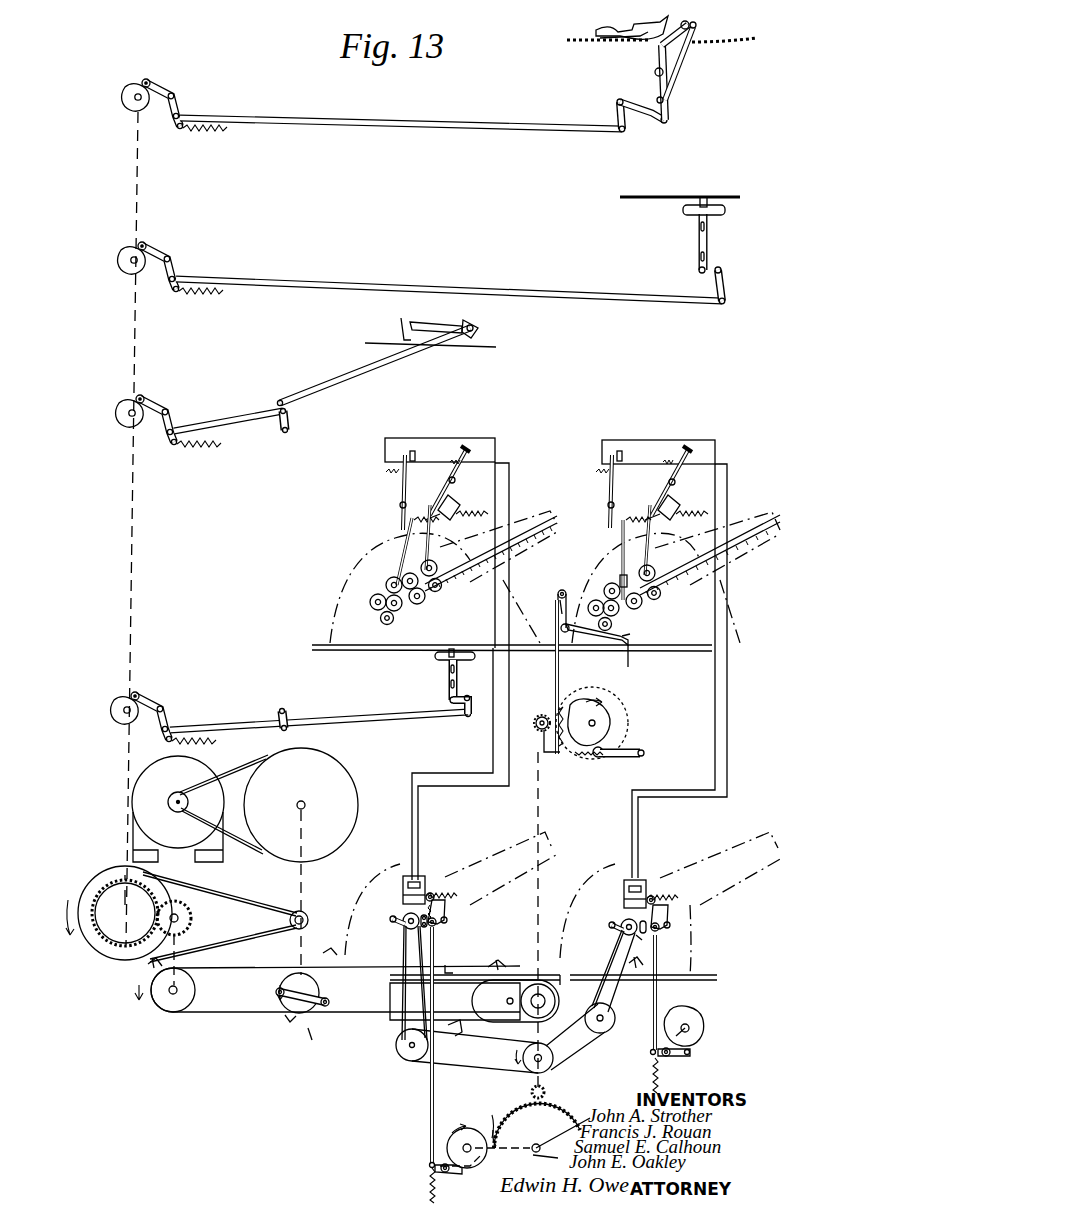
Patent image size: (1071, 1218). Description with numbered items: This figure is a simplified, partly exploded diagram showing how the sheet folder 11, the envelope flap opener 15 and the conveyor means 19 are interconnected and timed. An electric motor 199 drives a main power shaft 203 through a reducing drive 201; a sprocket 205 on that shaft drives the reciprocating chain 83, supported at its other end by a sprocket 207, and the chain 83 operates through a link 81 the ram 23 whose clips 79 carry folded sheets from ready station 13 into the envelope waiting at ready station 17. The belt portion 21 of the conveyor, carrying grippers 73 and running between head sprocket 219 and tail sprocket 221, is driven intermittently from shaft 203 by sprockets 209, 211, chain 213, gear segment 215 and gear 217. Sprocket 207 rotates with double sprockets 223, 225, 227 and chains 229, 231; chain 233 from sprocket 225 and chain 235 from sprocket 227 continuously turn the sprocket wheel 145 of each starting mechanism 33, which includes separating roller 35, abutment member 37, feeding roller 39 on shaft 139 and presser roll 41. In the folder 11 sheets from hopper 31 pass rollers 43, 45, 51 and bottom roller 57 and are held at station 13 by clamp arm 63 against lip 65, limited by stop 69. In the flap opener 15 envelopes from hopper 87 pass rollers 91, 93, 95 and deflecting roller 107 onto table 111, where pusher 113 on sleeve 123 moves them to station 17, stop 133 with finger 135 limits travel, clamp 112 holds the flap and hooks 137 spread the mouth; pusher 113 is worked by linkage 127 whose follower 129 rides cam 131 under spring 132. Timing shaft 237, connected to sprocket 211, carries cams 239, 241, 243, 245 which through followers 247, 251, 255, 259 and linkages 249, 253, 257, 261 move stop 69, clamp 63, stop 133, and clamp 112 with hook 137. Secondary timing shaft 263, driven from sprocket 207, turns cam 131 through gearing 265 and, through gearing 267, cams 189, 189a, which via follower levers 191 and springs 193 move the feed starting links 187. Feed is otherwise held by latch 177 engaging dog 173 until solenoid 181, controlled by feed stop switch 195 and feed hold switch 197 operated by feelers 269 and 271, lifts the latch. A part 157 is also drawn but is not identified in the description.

The sheet folding means 11 is at (343, 548).
The ready station 13 is at (440, 343).
The envelope opener 15 is at (600, 527).
The ready station 17 is at (699, 41).
The conveyor means 19 is at (313, 1050).
The chain or belt portion 21 is at (222, 1018).
The reciprocating ram 23 is at (462, 970).
The supply chute or hopper 31 is at (533, 512).
The starting mechanism 33 is at (457, 596).
The sheet separating roller 35 is at (437, 565).
The abutment member 37 is at (437, 593).
The feeding roller 39 is at (417, 604).
The presser roll 41 is at (408, 570).
The roller 43 is at (387, 582).
The roller 45 is at (402, 619).
The roller 51 is at (370, 601).
The bottom roller 57 is at (380, 622).
The clamping arm 63 is at (432, 324).
The supporting lip 65 is at (400, 333).
The stop 69 is at (428, 640).
The grippers 73 is at (150, 966).
The clips 79 is at (446, 965).
The link 81 is at (328, 998).
The driving chain 83 is at (290, 1018).
The supply chute or hopper 87 is at (760, 512).
The roller 91 is at (605, 588).
The roller 93 is at (617, 612).
The roller 95 is at (578, 590).
The deflecting roller 107 is at (625, 638).
The table 111 is at (598, 30).
The clamp 112 is at (612, 40).
The oscillating pusher 113 is at (636, 666).
The supporting sleeve 123 is at (560, 604).
The linkage 127 is at (555, 662).
The follower 129 is at (598, 758).
The cam 131 is at (608, 722).
The spring 132 is at (560, 732).
The stop 133 is at (718, 216).
The adjustable finger 135 is at (706, 199).
The opening hooks 137 is at (658, 58).
The shaft 139 is at (420, 926).
The sprocket wheel 145 is at (404, 914).
The arm 157 is at (403, 922).
The dog 173 is at (448, 904).
The pivoted latch 177 is at (460, 895).
The solenoid 181 is at (403, 882).
The link 187 is at (430, 1110).
The timing cam 189 is at (473, 1168).
The cam 189a is at (702, 1040).
The follower lever 191 is at (445, 1172).
The spring 193 is at (430, 1183).
The feed stop switch 195 is at (464, 448).
The feed hold switch 197 is at (404, 452).
The electric motor 199 is at (140, 793).
The reducing drive 201 is at (236, 768).
The main power shaft 203 is at (302, 876).
The sprocket 205 is at (292, 975).
The sprocket 207 is at (552, 996).
The sprocket 209 is at (306, 914).
The sprocket 211 is at (100, 882).
The chain 213 is at (222, 892).
The gear segment 215 is at (100, 940).
The gear 217 is at (192, 918).
The head sprocket 219 is at (195, 990).
The tail sprocket 221 is at (495, 999).
The double sprocket 223 is at (546, 1068).
The double sprocket 225 is at (410, 1058).
The double sprocket 227 is at (606, 1030).
The interconnecting chain 229 is at (488, 1072).
The interconnecting chain 231 is at (580, 1050).
The chain 233 is at (402, 957).
The chain 235 is at (628, 993).
The timing shaft 237 is at (130, 612).
The cam 239 is at (114, 715).
The cam 241 is at (120, 414).
The cam 243 is at (121, 261).
The cam 245 is at (126, 103).
The spring pressed follower 247 is at (152, 700).
The linkage 249 is at (294, 708).
The follower 251 is at (160, 403).
The linkage 253 is at (306, 410).
The follower 255 is at (162, 251).
The linkage 257 is at (571, 284).
The follower 259 is at (168, 92).
The linkage 261 is at (571, 121).
The secondary timing shaft 263 is at (541, 806).
The gearing 265 is at (540, 700).
The gearing 267 is at (513, 1107).
The feeler finger 269 is at (440, 512).
The feeler 271 is at (413, 522).